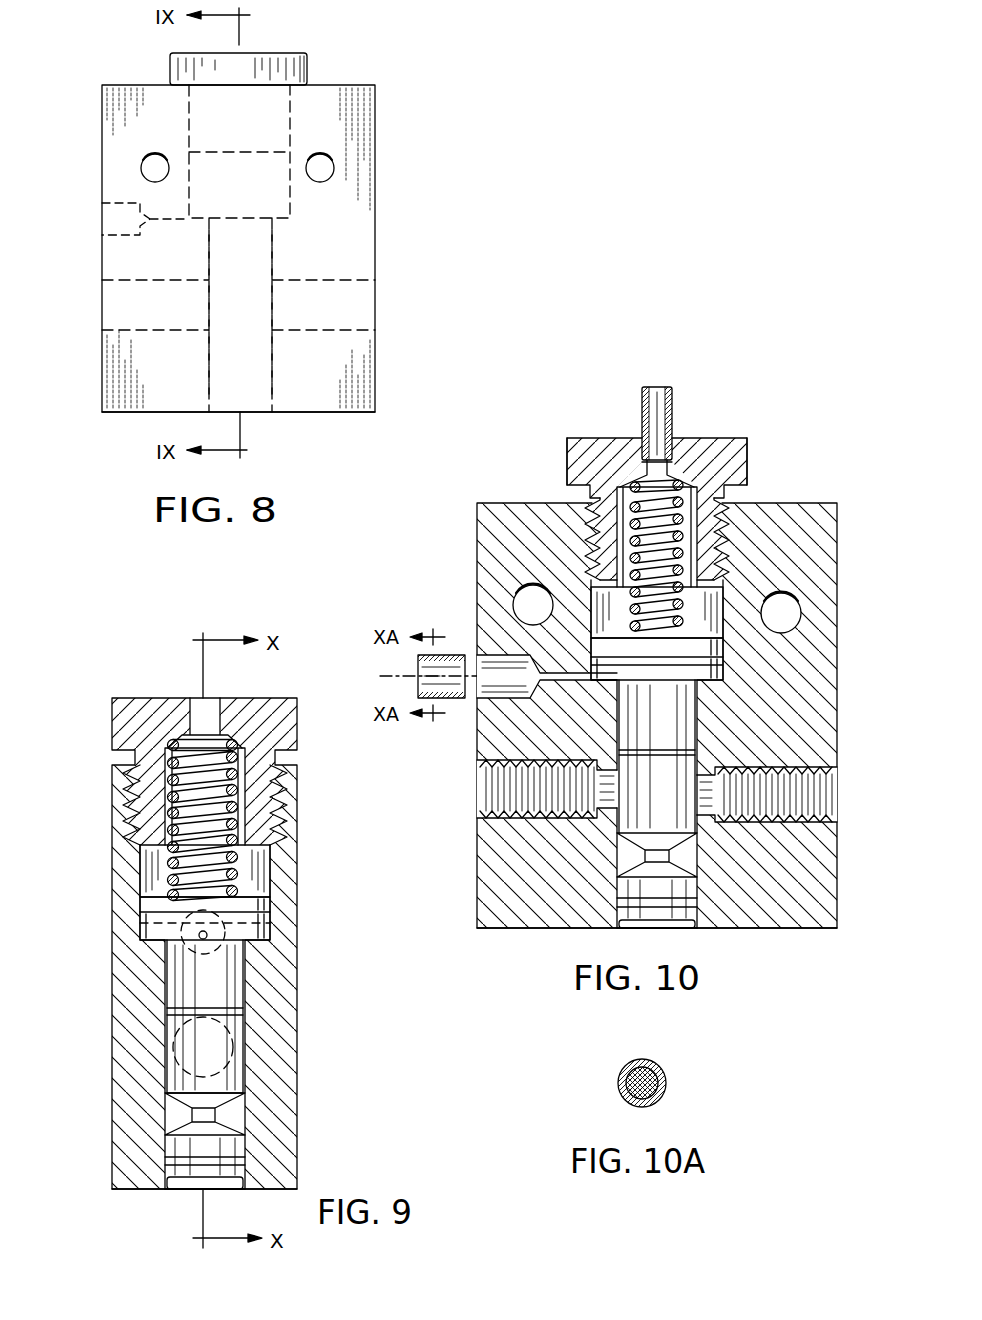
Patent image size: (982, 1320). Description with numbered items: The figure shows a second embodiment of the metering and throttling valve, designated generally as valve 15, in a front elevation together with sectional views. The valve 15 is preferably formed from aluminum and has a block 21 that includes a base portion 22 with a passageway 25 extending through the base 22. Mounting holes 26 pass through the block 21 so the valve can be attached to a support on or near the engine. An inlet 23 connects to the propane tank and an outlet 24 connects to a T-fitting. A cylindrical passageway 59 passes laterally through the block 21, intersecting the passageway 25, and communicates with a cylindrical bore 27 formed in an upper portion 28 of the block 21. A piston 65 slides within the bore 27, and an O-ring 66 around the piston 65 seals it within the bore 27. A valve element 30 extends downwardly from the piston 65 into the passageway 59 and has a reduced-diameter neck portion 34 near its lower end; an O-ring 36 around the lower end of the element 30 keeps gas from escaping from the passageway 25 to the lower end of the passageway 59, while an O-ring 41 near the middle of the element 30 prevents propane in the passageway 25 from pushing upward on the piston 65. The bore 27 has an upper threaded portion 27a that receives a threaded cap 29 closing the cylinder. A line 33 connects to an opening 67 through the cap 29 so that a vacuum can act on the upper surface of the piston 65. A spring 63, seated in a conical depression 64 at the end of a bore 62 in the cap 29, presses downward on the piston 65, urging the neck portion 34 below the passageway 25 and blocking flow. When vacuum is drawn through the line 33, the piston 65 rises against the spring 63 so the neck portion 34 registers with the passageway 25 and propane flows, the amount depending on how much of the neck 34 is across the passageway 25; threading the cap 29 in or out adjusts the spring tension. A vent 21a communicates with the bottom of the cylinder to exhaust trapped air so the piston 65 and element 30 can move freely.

In FIG. 8, the throttling valve 15 is at (382, 72).
In FIG. 9, the throttling valve 15 is at (112, 688).
In FIG. 10, the throttling valve 15 is at (845, 483).
In FIG. 8, the block 21 is at (102, 258).
In FIG. 8, the vent 21a is at (122, 202).
In FIG. 9, the vent 21a is at (140, 925).
In FIG. 10, the vent 21a is at (492, 652).
In FIG. 8, the base portion 22 is at (102, 378).
In FIG. 9, the base portion 22 is at (112, 1110).
In FIG. 10, the base portion 22 is at (482, 858).
In FIG. 10, the inlet 23 is at (809, 787).
In FIG. 9, the outlet 24 is at (168, 1040).
In FIG. 10, the outlet 24 is at (480, 787).
In FIG. 10, the passageway 25 is at (703, 775).
In FIG. 8, the mounting holes 26 is at (163, 157).
In FIG. 10, the mounting holes 26 is at (526, 593).
In FIG. 9, the cylindrical bore 27 is at (150, 863).
In FIG. 10, the cylindrical bore 27 is at (717, 604).
In FIG. 9, the upper threaded portion 27a is at (280, 790).
In FIG. 10, the upper threaded portion 27a is at (731, 540).
In FIG. 8, the upper portion 28 is at (376, 117).
In FIG. 9, the upper portion 28 is at (112, 784).
In FIG. 10, the upper portion 28 is at (477, 537).
In FIG. 9, the threaded cap 29 is at (258, 772).
In FIG. 10, the threaded cap 29 is at (712, 527).
In FIG. 9, the valve element 30 is at (230, 980).
In FIG. 10, the valve element 30 is at (681, 707).
In FIG. 10, the line 33 is at (642, 400).
In FIG. 9, the neck portion 34 is at (230, 1113).
In FIG. 10, the neck portion 34 is at (682, 858).
In FIG. 9, the O-ring 36 is at (221, 1158).
In FIG. 10, the O-ring 36 is at (688, 893).
In FIG. 9, the O-ring 41 is at (230, 1009).
In FIG. 10, the O-ring 41 is at (697, 752).
In FIG. 9, the cylindrical passageway 59 is at (168, 1117).
In FIG. 10, the cylindrical passageway 59 is at (615, 856).
In FIG. 10, the bore 62 is at (706, 492).
In FIG. 9, the spring 63 is at (228, 746).
In FIG. 10, the spring 63 is at (617, 492).
In FIG. 10, the conical depression 64 is at (712, 478).
In FIG. 9, the piston 65 is at (262, 899).
In FIG. 10, the piston 65 is at (707, 632).
In FIG. 9, the O-ring 66 is at (272, 926).
In FIG. 10, the O-ring 66 is at (723, 667).
In FIG. 9, the opening 67 is at (207, 708).
In FIG. 10, the opening 67 is at (677, 468).